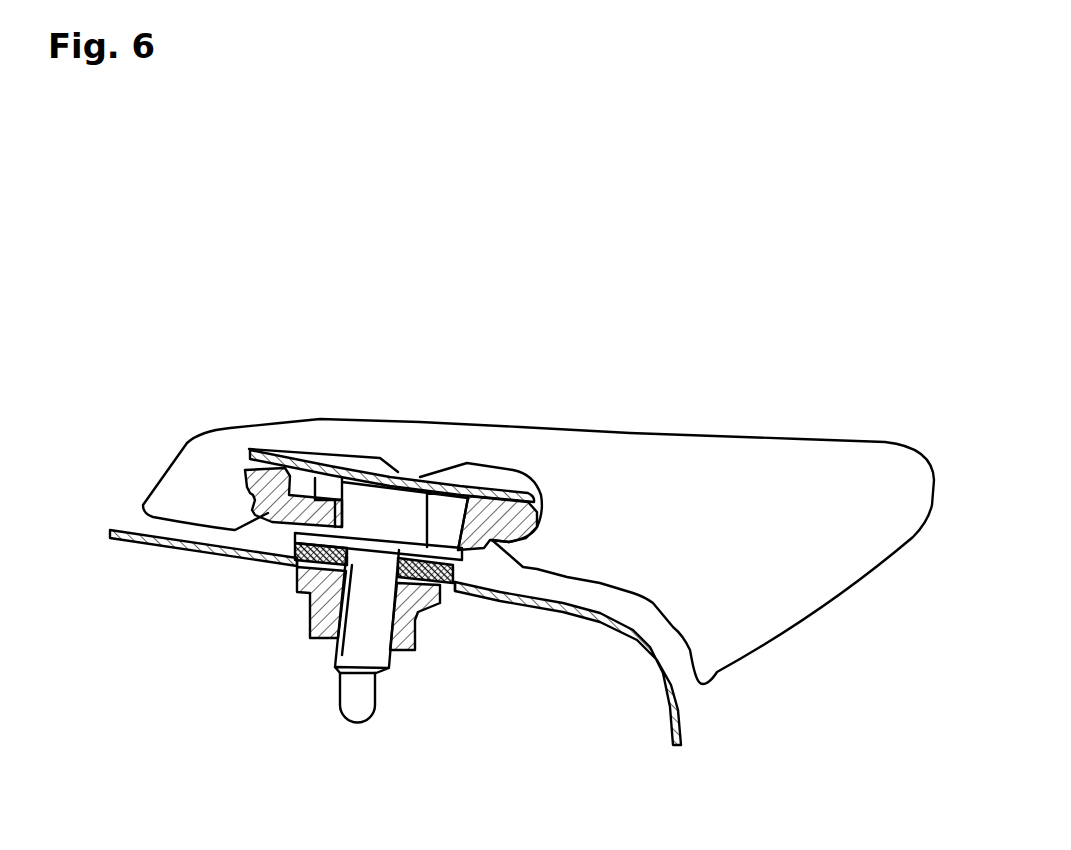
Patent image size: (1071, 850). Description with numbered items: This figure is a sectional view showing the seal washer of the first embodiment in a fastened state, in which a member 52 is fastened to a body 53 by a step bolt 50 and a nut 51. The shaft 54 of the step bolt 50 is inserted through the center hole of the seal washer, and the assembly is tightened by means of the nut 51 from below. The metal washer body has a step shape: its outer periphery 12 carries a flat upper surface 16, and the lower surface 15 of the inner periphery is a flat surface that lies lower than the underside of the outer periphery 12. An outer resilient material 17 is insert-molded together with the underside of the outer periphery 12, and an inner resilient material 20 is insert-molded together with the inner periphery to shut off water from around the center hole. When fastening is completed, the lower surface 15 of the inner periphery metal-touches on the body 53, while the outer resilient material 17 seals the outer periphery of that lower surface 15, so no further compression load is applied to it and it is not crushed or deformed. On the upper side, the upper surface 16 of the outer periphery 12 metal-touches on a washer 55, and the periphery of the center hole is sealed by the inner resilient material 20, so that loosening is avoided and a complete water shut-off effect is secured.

The outer periphery 12 is at (296, 543).
The lower surface 15 is at (297, 571).
The upper surface 16 is at (300, 512).
The outer resilient material 17 is at (295, 577).
The inner resilient material 20 is at (347, 562).
The step bolt 50 is at (368, 495).
The nut 51 is at (423, 630).
The member 52 is at (513, 482).
The body 53 is at (563, 601).
The shaft 54 is at (370, 657).
The washer 55 is at (387, 545).